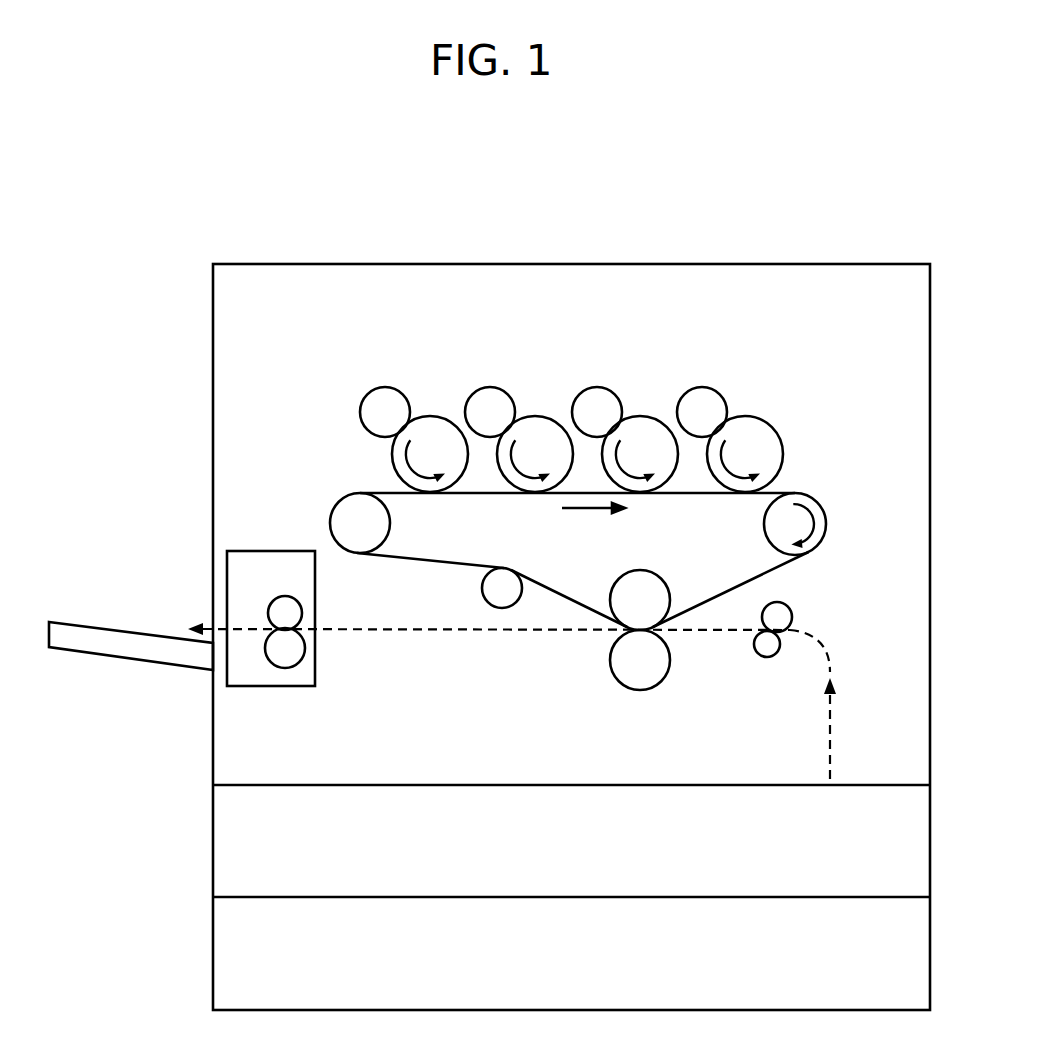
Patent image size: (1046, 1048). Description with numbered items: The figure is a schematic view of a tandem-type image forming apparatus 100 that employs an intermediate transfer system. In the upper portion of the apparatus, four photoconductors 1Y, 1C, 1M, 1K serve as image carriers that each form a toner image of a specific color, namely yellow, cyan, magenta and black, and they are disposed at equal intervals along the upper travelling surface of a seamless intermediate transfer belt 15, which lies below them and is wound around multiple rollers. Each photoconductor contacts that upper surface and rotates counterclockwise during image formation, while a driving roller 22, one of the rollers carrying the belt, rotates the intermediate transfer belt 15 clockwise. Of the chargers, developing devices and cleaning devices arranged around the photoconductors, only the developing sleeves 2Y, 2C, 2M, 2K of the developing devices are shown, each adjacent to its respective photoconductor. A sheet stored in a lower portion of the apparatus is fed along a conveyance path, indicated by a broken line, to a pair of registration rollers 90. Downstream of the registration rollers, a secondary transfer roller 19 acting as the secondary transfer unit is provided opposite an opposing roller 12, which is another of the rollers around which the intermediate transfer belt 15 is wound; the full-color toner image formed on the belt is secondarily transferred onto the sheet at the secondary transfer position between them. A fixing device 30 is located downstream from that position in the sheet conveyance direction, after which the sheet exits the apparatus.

The image forming apparatus 100 is at (801, 233).
The photoconductor 1Y is at (431, 418).
The photoconductor 1C is at (536, 418).
The photoconductor 1M is at (641, 418).
The photoconductor 1K is at (746, 418).
The developing sleeve 2Y is at (385, 388).
The developing sleeve 2C is at (490, 388).
The developing sleeve 2M is at (597, 388).
The developing sleeve 2K is at (702, 388).
The intermediate transfer belt 15 is at (428, 562).
The driving roller 22 is at (807, 514).
The opposing roller 12 is at (641, 573).
The secondary transfer roller 19 is at (641, 690).
The pair of registration rollers 90 is at (795, 603).
The fixing device 30 is at (268, 541).